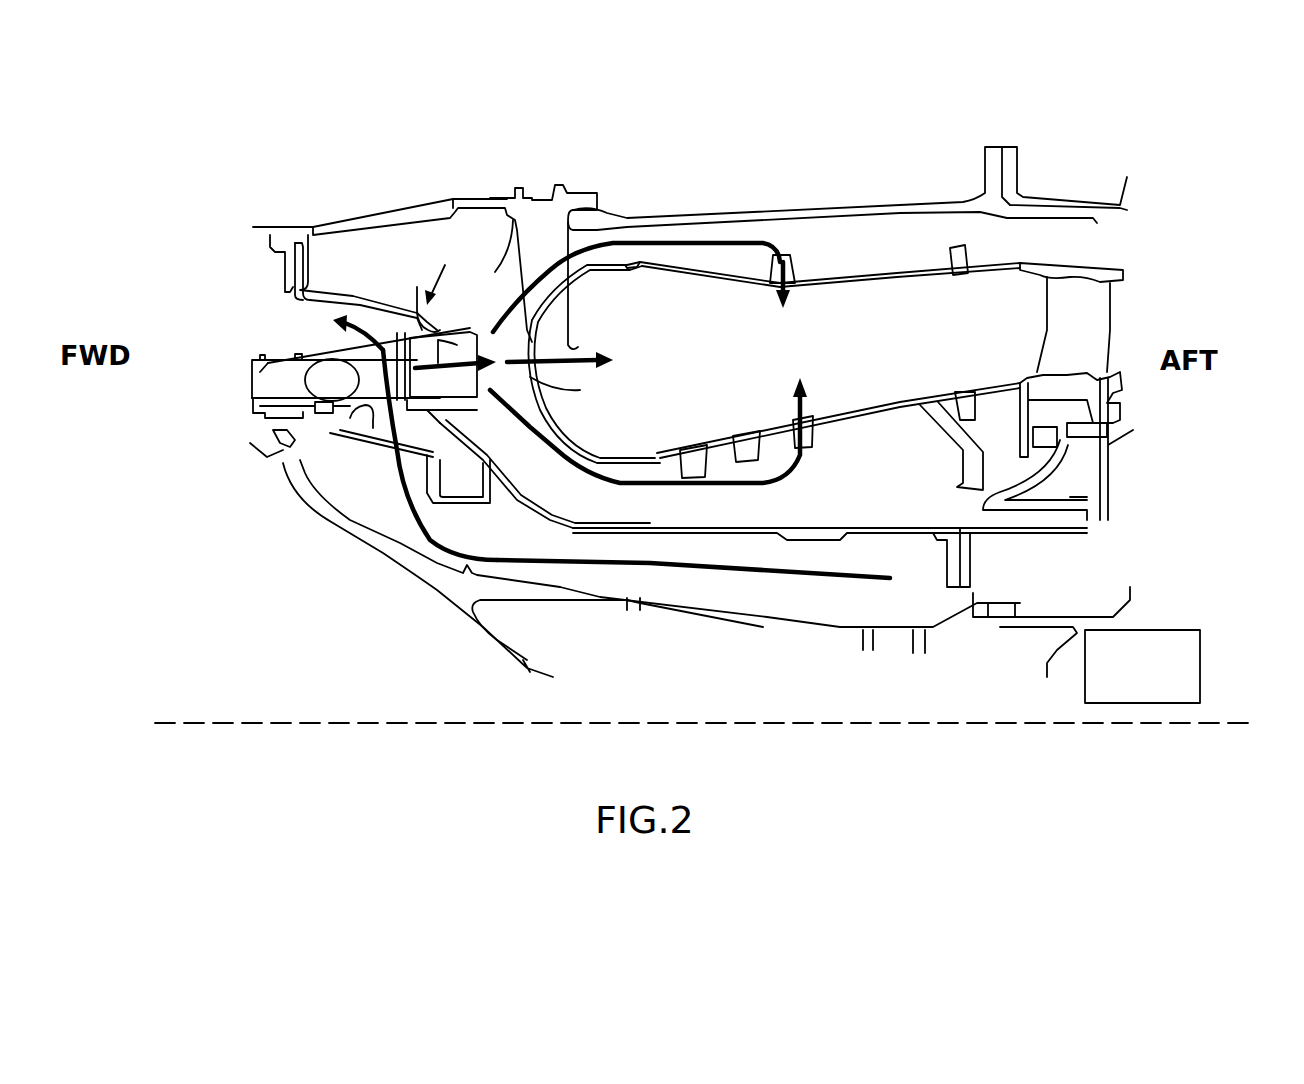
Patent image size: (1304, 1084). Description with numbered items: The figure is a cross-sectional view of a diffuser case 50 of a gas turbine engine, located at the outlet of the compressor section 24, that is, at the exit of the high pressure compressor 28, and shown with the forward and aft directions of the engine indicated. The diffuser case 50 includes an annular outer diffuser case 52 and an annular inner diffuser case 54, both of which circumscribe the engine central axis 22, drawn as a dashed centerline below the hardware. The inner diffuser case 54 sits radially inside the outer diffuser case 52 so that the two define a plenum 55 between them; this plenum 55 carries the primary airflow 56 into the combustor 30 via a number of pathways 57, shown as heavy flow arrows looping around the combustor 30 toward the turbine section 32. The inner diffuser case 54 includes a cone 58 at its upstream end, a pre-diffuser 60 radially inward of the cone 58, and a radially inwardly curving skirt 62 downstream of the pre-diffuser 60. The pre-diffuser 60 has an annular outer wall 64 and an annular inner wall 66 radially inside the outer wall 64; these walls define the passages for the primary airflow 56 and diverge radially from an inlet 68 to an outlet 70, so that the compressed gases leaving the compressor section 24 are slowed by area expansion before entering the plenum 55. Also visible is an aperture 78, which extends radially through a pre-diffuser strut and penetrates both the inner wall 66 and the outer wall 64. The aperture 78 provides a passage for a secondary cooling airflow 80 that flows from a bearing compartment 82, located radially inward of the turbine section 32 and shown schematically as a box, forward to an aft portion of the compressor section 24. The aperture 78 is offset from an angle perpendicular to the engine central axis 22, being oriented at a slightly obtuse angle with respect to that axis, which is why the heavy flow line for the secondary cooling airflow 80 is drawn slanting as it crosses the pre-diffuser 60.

The engine central axis 22 is at (1037, 727).
The compressor section 24 is at (262, 378).
The high pressure compressor 28 is at (252, 395).
The combustor 30 is at (830, 302).
The turbine section 32 is at (1115, 265).
The diffuser case 50 is at (313, 227).
The outer diffuser case 52 is at (410, 207).
The inner diffuser case 54 is at (767, 529).
The plenum 55 is at (483, 245).
The primary airflow 56 is at (457, 347).
The pathways 57 is at (630, 247).
The cone 58 is at (362, 297).
The pre-diffuser 60 is at (451, 279).
The skirt 62 is at (477, 488).
The outer wall 64 is at (417, 300).
The inner wall 66 is at (455, 412).
The inlet 68 is at (340, 378).
The outlet 70 is at (483, 330).
The aperture 78 is at (383, 375).
The secondary cooling airflow 80 is at (688, 573).
The bearing compartment 82 is at (1200, 665).